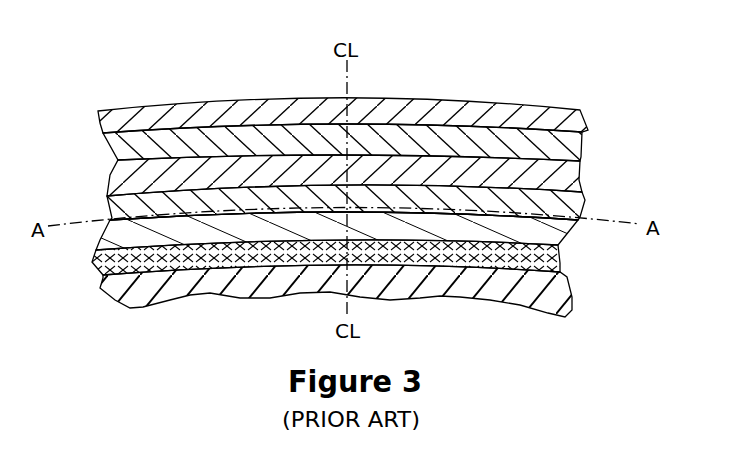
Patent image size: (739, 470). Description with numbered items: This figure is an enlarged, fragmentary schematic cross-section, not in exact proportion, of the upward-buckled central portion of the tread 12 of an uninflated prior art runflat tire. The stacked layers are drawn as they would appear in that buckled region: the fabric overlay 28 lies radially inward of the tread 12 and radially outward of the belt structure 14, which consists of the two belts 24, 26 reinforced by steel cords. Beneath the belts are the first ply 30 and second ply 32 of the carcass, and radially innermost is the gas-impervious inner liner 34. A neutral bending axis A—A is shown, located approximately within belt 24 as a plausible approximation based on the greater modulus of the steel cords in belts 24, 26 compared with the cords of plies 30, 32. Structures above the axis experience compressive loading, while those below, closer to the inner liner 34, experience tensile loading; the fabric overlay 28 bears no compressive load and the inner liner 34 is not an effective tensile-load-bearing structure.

The tread 12 is at (247, 280).
The belt structure 14 is at (488, 216).
The belt 24 is at (450, 230).
The belt 26 is at (402, 197).
The fabric overlay 28 is at (452, 252).
The first ply 30 is at (228, 152).
The second ply 32 is at (290, 178).
The inner liner 34 is at (176, 123).